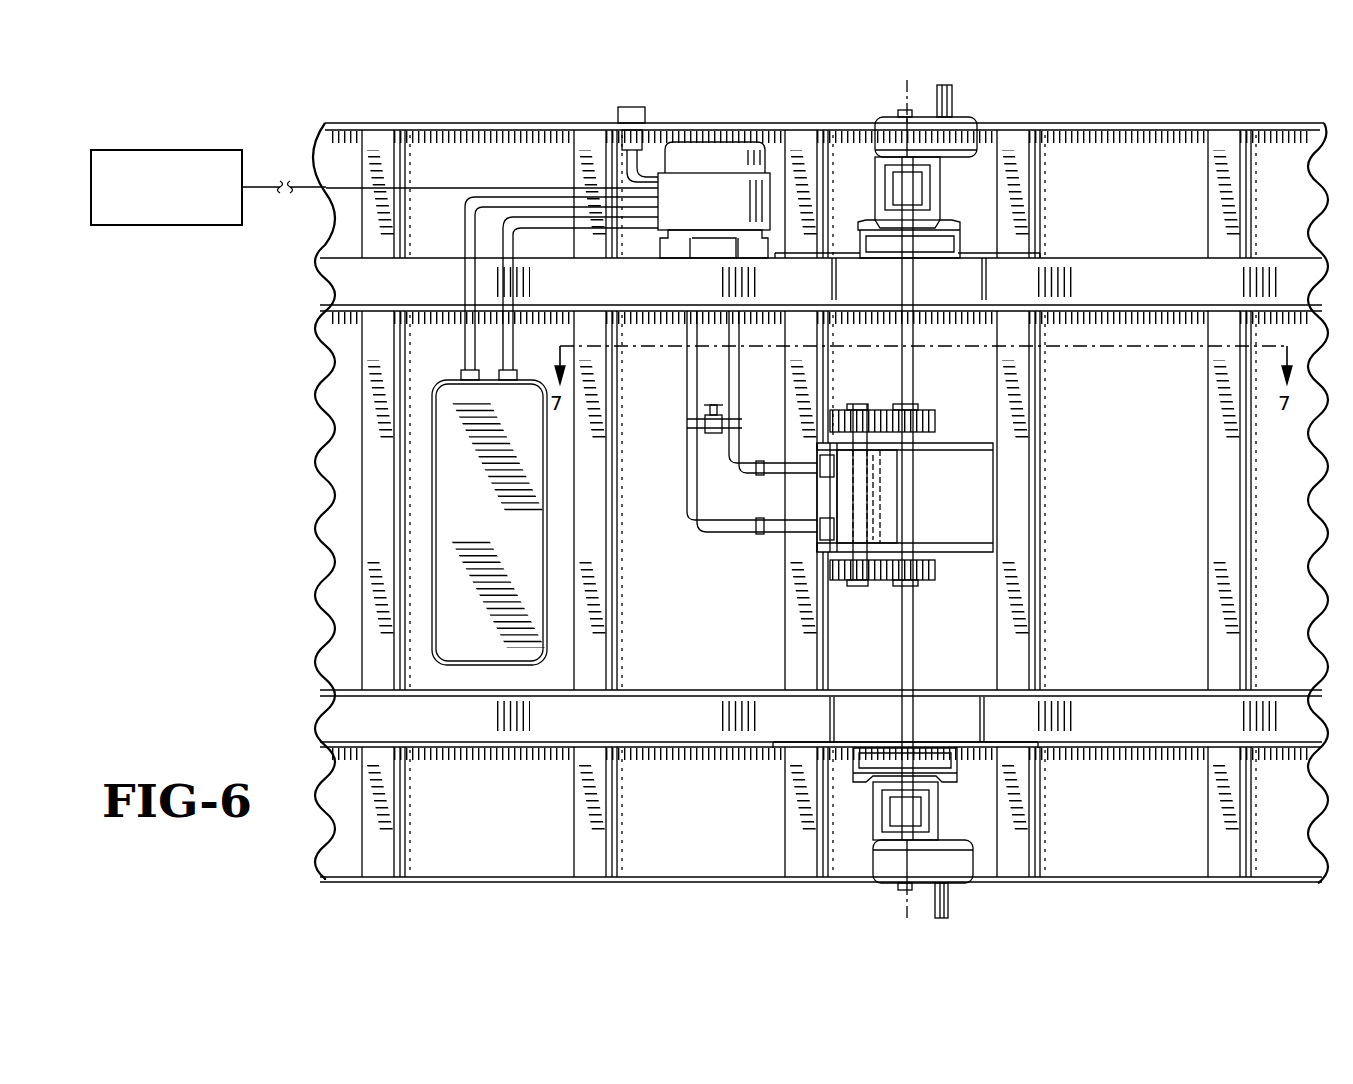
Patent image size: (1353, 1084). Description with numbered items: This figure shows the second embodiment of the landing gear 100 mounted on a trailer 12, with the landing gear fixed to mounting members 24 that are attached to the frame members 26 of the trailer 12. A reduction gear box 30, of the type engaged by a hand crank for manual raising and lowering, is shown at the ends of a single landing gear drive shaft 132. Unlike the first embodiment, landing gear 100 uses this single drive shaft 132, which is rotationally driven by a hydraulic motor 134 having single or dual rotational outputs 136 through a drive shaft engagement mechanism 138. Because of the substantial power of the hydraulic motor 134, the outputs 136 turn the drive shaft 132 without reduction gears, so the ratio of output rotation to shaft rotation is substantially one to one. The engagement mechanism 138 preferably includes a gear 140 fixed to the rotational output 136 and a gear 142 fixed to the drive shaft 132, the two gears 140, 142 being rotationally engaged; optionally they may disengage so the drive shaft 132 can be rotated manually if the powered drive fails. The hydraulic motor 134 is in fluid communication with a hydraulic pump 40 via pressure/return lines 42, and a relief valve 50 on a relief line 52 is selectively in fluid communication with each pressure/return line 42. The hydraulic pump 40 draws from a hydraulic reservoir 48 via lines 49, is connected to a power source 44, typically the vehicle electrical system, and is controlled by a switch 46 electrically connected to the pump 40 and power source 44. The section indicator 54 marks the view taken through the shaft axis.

The trailer 12 is at (1140, 122).
The mounting members 24 is at (1012, 253).
The frame members 26 is at (1157, 272).
The reduction gear box 30 is at (965, 117).
The hydraulic pump 40 is at (712, 158).
The pressure/return lines 42 is at (738, 478).
The power source 44 is at (137, 228).
The switch 46 is at (632, 106).
The hydraulic reservoir 48 is at (502, 536).
The lines 49 is at (538, 215).
The relief valve 50 is at (712, 414).
The relief line 52 is at (690, 423).
The shaft axis 54 is at (907, 95).
The landing gear 100 is at (264, 126).
The landing gear drive shaft 132 is at (912, 660).
The hydraulic motor 134 is at (880, 507).
The rotational outputs 136 is at (858, 442).
The drive shaft engagement mechanism 138 is at (893, 402).
The rotational output gear 140 is at (858, 412).
The drive shaft gear 142 is at (932, 418).